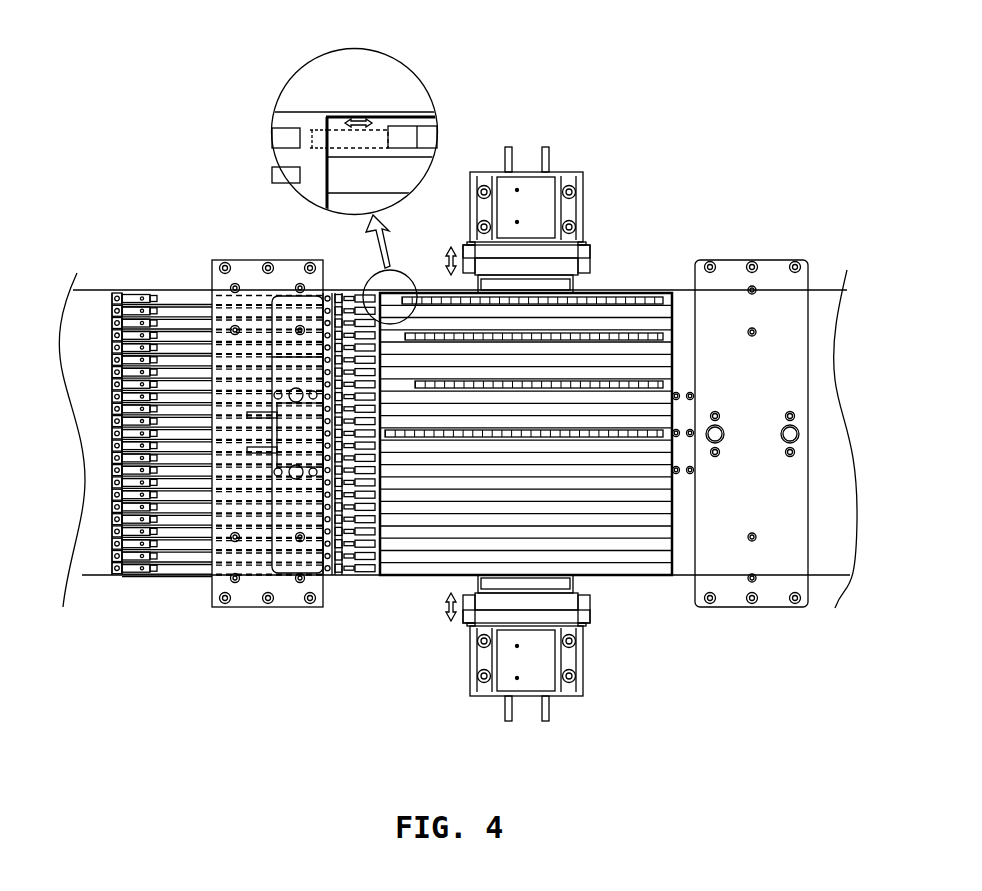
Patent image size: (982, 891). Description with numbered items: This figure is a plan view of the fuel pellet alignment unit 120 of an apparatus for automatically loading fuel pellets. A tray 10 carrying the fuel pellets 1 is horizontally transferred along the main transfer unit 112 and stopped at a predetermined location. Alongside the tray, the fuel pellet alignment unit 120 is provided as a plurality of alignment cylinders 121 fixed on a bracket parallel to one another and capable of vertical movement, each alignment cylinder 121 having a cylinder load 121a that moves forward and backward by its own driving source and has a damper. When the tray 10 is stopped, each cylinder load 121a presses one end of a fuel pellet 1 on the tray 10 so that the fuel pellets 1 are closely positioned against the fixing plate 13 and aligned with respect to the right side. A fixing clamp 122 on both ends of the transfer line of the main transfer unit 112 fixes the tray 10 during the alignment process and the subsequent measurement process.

The fuel pellet 1 is at (413, 137).
The tray 10 is at (383, 118).
The fixing plate 13 is at (672, 355).
The main transfer unit 112 is at (370, 575).
The fuel pellet alignment unit 120 is at (262, 248).
The alignment cylinder 121 is at (197, 297).
The cylinder load 121a is at (290, 138).
The fixing clamp 122 is at (563, 267).